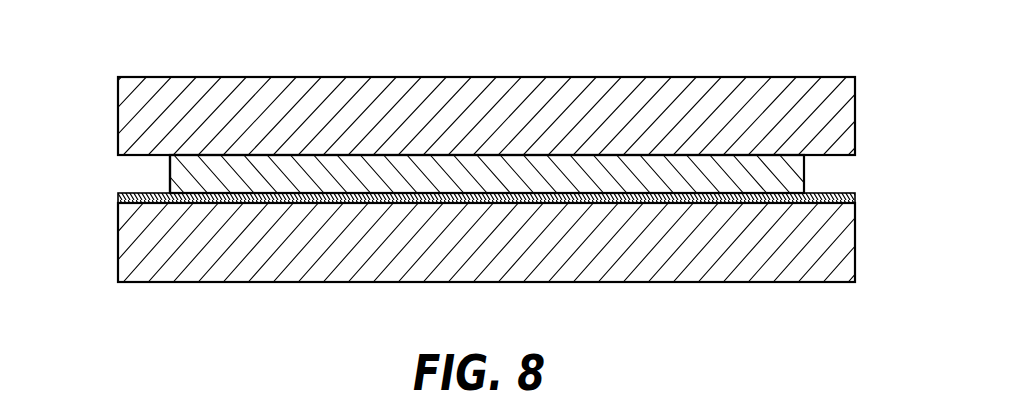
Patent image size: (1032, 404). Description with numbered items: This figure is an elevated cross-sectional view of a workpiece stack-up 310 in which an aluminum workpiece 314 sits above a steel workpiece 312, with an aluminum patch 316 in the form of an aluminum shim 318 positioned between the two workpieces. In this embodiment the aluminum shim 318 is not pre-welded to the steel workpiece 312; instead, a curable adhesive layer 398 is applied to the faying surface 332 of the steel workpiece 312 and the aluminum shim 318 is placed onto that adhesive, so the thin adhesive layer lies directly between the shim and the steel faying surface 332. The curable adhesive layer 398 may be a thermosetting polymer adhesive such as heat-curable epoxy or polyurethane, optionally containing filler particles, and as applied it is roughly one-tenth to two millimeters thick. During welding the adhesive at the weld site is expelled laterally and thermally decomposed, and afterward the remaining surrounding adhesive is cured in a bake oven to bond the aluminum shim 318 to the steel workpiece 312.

The workpiece stack-up 310 is at (476, 182).
The steel workpiece 312 is at (135, 250).
The aluminum workpiece 314 is at (130, 110).
The aluminum patch 316 is at (162, 180).
The aluminum shim 318 is at (233, 173).
The faying surface 332 is at (838, 192).
The curable adhesive layer 398 is at (270, 203).